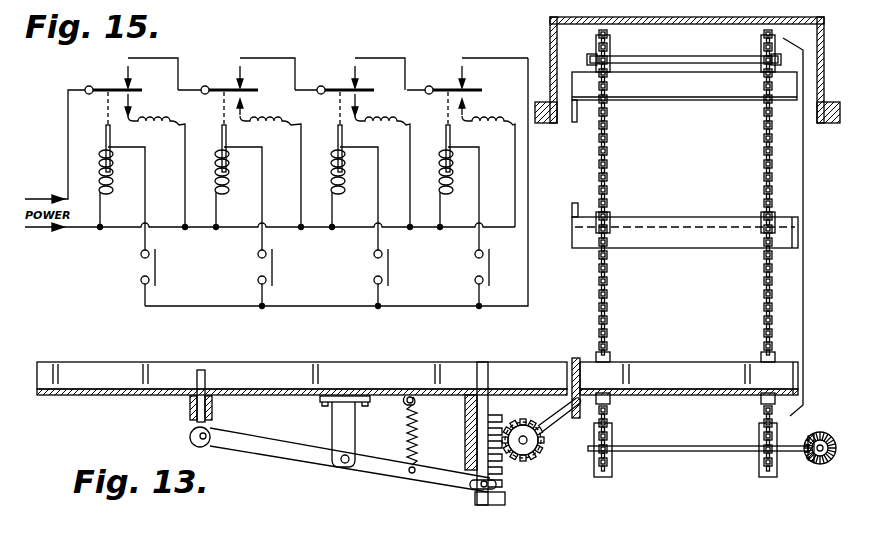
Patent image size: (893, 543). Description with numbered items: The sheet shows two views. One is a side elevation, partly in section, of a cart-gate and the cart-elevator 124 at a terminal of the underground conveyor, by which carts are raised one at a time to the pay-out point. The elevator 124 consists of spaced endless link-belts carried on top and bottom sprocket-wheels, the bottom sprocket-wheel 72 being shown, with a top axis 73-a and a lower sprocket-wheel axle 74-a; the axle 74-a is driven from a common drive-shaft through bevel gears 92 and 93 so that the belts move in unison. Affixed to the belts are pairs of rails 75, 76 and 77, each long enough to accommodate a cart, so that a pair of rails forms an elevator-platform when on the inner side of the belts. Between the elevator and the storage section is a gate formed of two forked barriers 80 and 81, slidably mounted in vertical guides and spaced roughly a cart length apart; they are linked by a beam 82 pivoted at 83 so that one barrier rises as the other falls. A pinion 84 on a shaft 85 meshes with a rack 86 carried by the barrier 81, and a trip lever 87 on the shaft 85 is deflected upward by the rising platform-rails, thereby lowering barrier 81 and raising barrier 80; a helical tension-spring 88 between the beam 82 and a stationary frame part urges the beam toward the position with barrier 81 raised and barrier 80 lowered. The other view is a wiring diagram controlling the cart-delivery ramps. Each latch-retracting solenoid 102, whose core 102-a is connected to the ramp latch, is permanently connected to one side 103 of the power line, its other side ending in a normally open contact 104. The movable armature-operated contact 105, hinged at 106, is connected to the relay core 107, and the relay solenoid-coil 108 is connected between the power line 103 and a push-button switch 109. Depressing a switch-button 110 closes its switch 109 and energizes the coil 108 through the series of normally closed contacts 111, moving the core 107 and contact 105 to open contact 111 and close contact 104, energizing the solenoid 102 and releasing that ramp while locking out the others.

In FIG. 15, the latch-retracting solenoid 102 is at (172, 116).
In FIG. 15, the core 102-a is at (172, 127).
In FIG. 15, the power line 103 is at (192, 234).
In FIG. 15, the contact 104 is at (131, 110).
In FIG. 15, the movable armature-operated contact 105 is at (104, 87).
In FIG. 15, the pivot mounting 106 is at (82, 87).
In FIG. 15, the core 107 is at (105, 139).
In FIG. 15, the relay solenoid-coil 108 is at (100, 180).
In FIG. 15, the push-button switch 109 is at (139, 267).
In FIG. 15, the switch-button 110 is at (160, 271).
In FIG. 15, the contact 111 is at (131, 83).
In FIG. 13, the bottom sprocket-wheel 72 is at (777, 465).
In FIG. 13, the top axis 73-a is at (704, 59).
In FIG. 13, the lower sprocket-wheel axle 74-a is at (713, 445).
In FIG. 13, the rail 75 is at (662, 380).
In FIG. 13, the rail 76 is at (571, 236).
In FIG. 13, the rail 77 is at (676, 96).
In FIG. 13, the forked barrier 80 is at (203, 369).
In FIG. 13, the forked barrier 81 is at (482, 390).
In FIG. 13, the beam 82 is at (298, 457).
In FIG. 13, the pivot 83 is at (346, 466).
In FIG. 13, the pinion 84 is at (538, 452).
In FIG. 13, the shaft 85 is at (527, 448).
In FIG. 13, the rack 86 is at (506, 480).
In FIG. 13, the trip lever 87 is at (552, 418).
In FIG. 13, the spring 88 is at (415, 440).
In FIG. 13, the bevel gear 92 is at (827, 431).
In FIG. 13, the bevel gear 93 is at (812, 436).
In FIG. 13, the elevator 124 is at (803, 220).